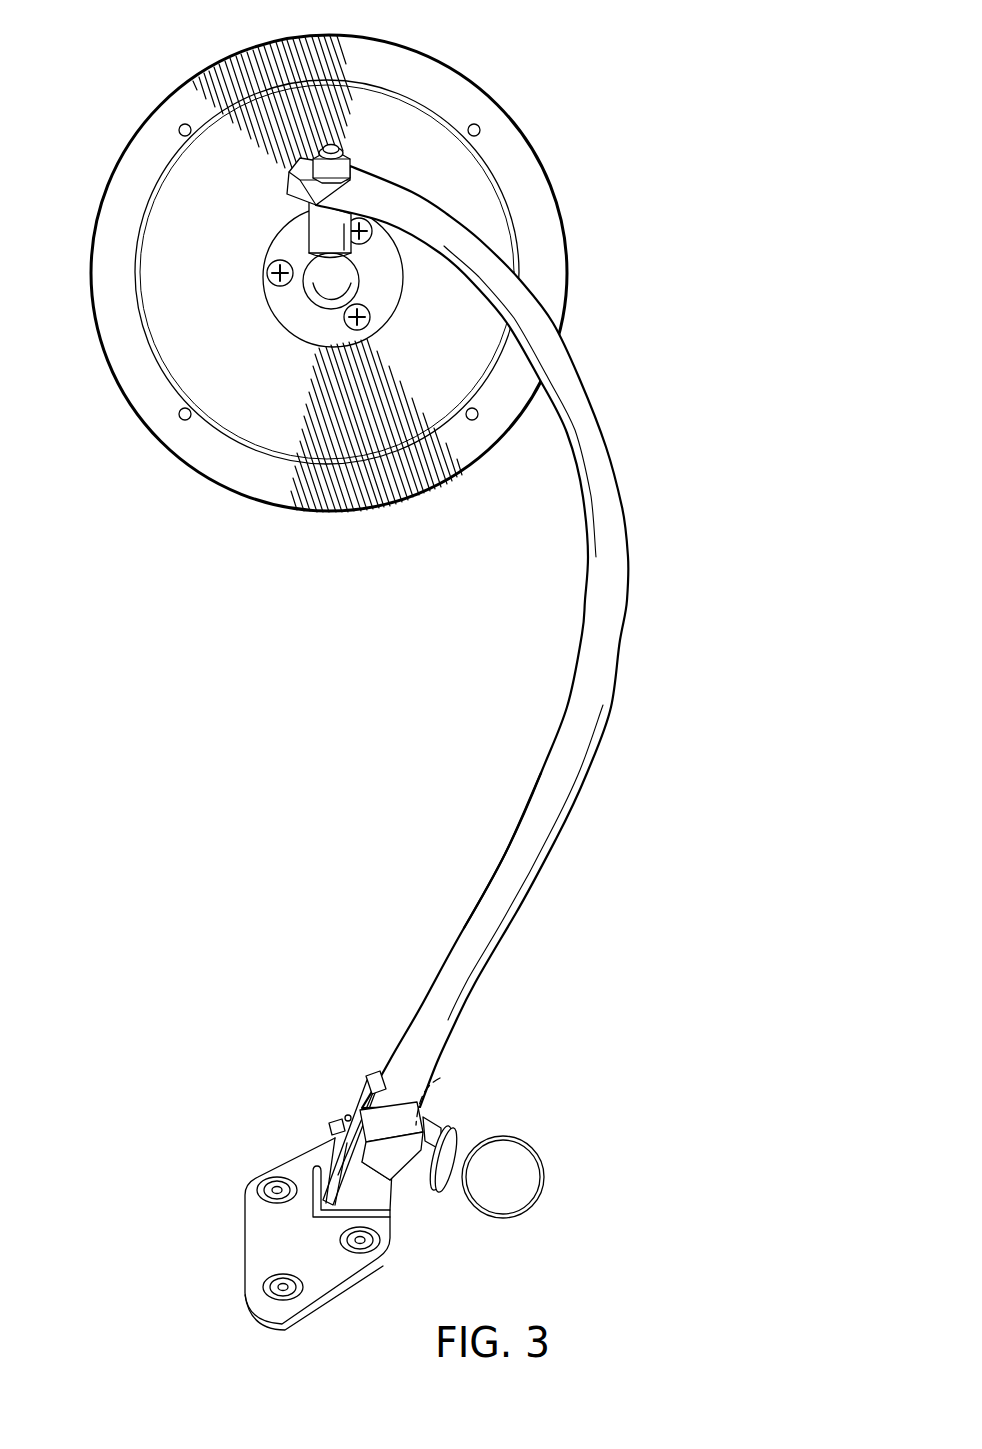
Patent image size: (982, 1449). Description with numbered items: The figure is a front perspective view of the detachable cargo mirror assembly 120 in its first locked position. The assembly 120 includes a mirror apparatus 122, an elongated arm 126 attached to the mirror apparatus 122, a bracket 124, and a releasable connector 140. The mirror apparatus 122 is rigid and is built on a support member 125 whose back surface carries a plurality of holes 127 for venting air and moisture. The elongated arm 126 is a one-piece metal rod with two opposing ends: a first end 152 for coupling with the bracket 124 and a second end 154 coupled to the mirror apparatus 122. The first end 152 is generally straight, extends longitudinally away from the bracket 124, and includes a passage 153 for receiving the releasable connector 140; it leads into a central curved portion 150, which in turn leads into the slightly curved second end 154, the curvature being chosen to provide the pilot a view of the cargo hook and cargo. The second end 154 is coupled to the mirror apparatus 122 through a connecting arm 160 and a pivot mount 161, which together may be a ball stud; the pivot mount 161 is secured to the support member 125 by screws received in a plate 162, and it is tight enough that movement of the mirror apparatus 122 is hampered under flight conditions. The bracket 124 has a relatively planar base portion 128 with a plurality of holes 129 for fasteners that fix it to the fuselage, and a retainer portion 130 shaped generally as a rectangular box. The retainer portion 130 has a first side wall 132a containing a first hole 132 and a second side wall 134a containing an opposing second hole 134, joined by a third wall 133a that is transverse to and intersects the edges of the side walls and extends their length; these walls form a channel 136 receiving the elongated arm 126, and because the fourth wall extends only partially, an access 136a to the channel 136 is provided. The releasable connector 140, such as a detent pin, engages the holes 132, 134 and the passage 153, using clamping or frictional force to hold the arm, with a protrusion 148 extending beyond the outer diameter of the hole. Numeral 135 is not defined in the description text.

The detachable cargo mirror assembly 120 is at (396, 675).
The mirror apparatus 122 is at (322, 256).
The bracket 124 is at (352, 1169).
The support member 125 is at (385, 117).
The elongated arm 126 is at (566, 826).
The holes 127 is at (480, 128).
The base portion 128 is at (262, 1287).
The holes 129 is at (272, 1190).
The retainer portion 130 is at (334, 1138).
The first hole 132 is at (363, 1090).
The first side wall 132a is at (368, 1086).
The third wall 133a is at (383, 1075).
The second hole 134 is at (413, 1145).
The second side wall 134a is at (380, 1170).
The bracket foot 135 is at (348, 1202).
The channel 136 is at (425, 1117).
The access 136a is at (360, 1244).
The releasable connector 140 is at (455, 1135).
The protrusion 148 is at (335, 1128).
The central curved portion 150 is at (494, 627).
The first end 152 is at (501, 862).
The passage 153 is at (440, 1078).
The second end 154 is at (467, 252).
The connecting arm 160 is at (318, 233).
The pivot mount 161 is at (292, 316).
The plate 162 is at (268, 273).